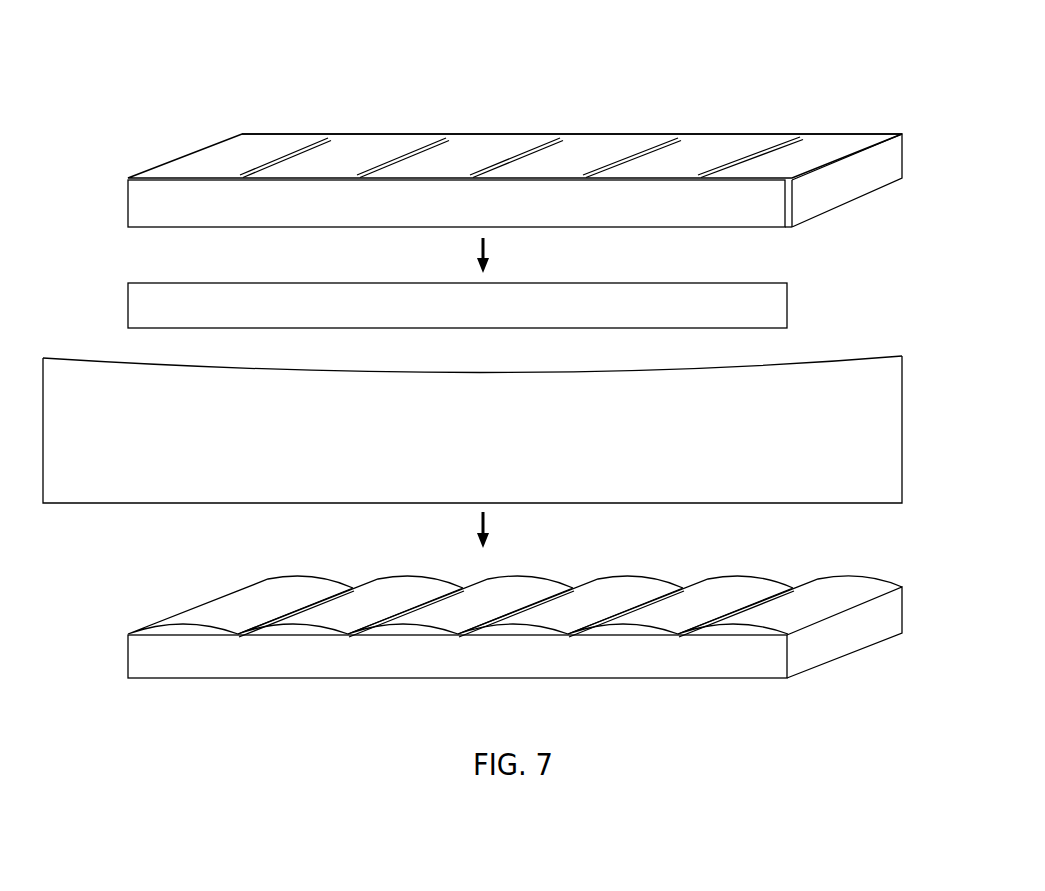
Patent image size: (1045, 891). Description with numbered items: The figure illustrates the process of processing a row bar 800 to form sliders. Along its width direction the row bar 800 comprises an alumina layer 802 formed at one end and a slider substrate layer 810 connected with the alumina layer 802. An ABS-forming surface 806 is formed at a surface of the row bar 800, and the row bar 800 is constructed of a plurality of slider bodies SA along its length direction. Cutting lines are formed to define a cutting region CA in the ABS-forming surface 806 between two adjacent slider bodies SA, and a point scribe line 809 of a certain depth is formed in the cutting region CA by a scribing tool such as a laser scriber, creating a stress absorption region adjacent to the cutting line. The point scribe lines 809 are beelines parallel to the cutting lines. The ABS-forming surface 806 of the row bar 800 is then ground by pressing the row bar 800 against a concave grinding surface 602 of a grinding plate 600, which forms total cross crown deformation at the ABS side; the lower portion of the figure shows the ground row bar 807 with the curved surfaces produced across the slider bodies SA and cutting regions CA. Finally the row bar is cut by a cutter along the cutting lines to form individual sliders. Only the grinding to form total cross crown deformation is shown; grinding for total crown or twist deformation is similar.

The row bar 800 is at (525, 148).
The alumina layer 802 is at (148, 180).
The ABS-forming surface 806 is at (333, 155).
The point scribe line 809 is at (820, 132).
The slider substrate layer 810 is at (828, 188).
The grinding plate 600 is at (488, 414).
The concave grinding surface 602 is at (515, 373).
The lenticular lens sheet 807 is at (747, 587).
The slider body SA is at (225, 155).
The cutting region CA is at (372, 155).